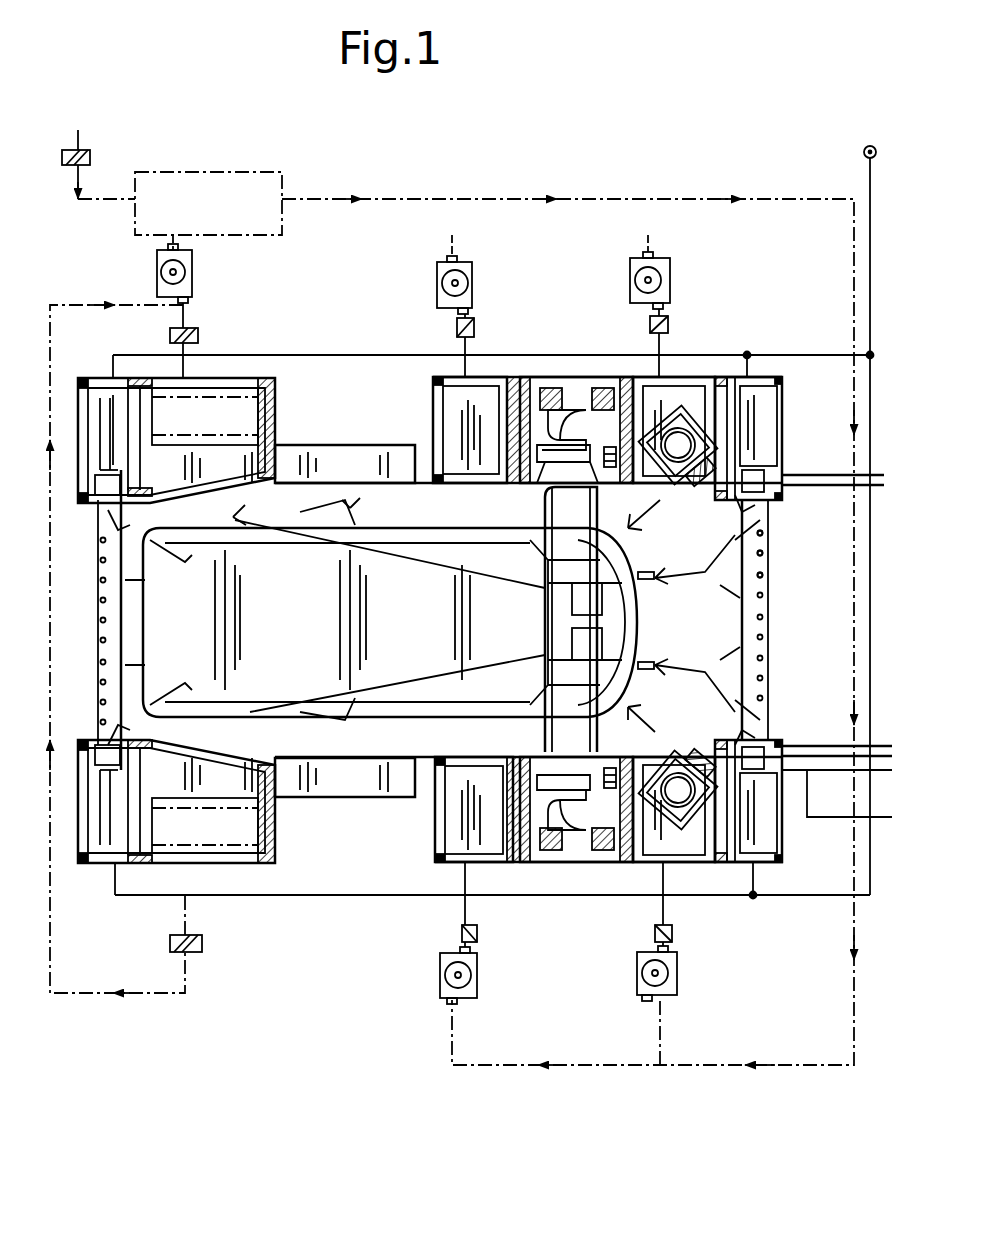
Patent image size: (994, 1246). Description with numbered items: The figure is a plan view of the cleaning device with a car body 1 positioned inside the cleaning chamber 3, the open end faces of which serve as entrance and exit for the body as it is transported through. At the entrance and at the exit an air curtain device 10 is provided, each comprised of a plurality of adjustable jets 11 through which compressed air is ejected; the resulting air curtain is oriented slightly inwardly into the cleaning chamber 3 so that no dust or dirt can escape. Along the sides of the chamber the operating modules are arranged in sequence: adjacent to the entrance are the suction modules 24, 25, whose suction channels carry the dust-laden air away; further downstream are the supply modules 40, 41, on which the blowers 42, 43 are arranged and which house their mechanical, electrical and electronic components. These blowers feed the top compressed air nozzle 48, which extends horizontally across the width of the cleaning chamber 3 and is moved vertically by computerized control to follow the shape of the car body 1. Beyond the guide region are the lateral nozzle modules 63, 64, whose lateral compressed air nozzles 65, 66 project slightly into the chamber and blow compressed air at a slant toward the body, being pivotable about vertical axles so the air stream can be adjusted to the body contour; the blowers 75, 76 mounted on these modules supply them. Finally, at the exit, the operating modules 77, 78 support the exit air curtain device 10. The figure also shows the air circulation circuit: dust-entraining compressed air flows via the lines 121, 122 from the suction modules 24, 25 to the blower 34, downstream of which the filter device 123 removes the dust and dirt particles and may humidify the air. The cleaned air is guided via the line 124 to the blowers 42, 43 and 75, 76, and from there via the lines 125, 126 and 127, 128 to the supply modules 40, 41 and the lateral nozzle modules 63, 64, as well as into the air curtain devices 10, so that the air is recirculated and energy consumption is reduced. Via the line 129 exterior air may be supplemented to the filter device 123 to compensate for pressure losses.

The car body 1 is at (426, 712).
The cleaning chamber 3 is at (368, 748).
The air curtain device 10 is at (108, 653).
The jets 11 is at (763, 533).
The suction module 24 is at (277, 383).
The suction module 25 is at (241, 866).
The blower 34 is at (186, 290).
The supply module 40 is at (447, 436).
The supply module 41 is at (462, 832).
The blower 42 is at (468, 272).
The blower 43 is at (468, 993).
The top compressed air nozzle 48 is at (570, 728).
The lateral nozzle module 63 is at (745, 380).
The lateral nozzle module 64 is at (732, 800).
The lateral compressed air nozzle 65 is at (680, 444).
The lateral compressed air nozzle 66 is at (690, 790).
The blower 75 is at (660, 268).
The blower 76 is at (668, 993).
The operating module 77 is at (755, 435).
The operating module 78 is at (770, 815).
The line 121 is at (88, 995).
The line 122 is at (185, 366).
The filter device 123 is at (258, 183).
The line 124 is at (497, 198).
The line 125 is at (468, 350).
The line 126 is at (470, 882).
The line 127 is at (662, 348).
The line 128 is at (662, 910).
The line 129 is at (95, 210).